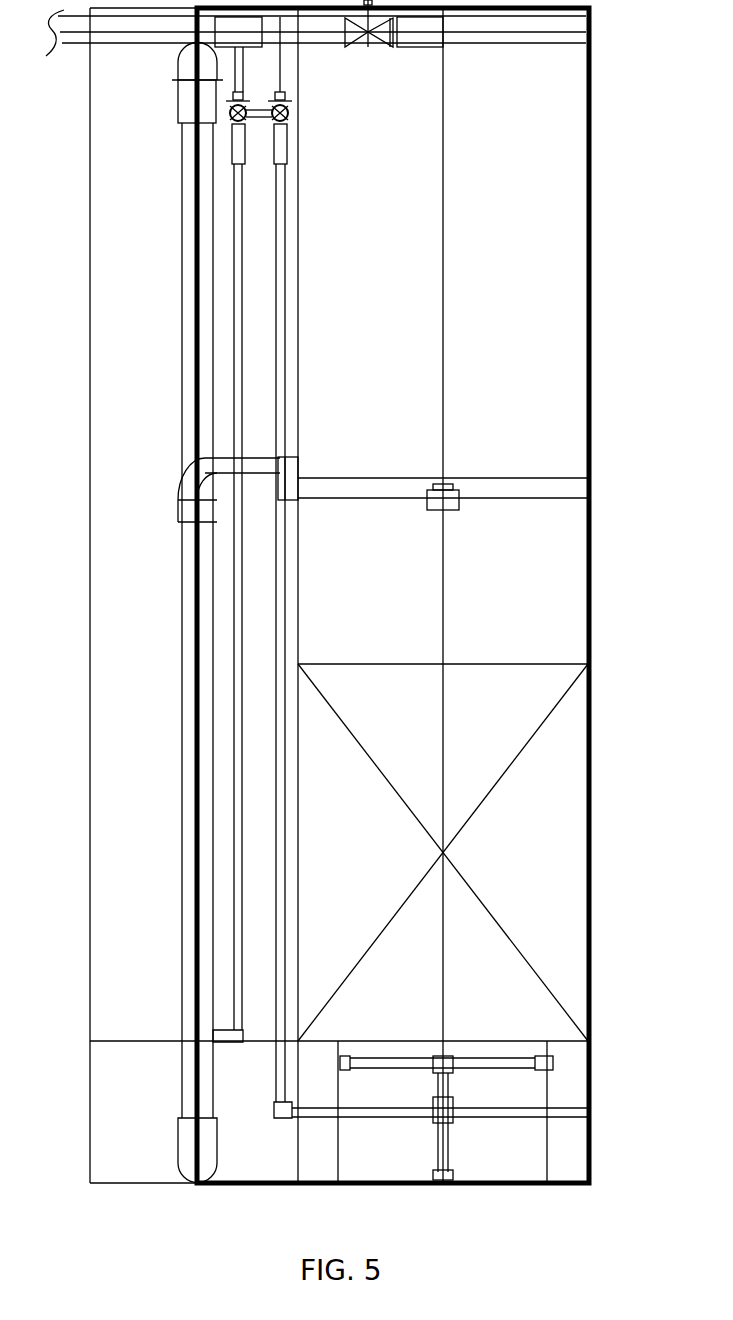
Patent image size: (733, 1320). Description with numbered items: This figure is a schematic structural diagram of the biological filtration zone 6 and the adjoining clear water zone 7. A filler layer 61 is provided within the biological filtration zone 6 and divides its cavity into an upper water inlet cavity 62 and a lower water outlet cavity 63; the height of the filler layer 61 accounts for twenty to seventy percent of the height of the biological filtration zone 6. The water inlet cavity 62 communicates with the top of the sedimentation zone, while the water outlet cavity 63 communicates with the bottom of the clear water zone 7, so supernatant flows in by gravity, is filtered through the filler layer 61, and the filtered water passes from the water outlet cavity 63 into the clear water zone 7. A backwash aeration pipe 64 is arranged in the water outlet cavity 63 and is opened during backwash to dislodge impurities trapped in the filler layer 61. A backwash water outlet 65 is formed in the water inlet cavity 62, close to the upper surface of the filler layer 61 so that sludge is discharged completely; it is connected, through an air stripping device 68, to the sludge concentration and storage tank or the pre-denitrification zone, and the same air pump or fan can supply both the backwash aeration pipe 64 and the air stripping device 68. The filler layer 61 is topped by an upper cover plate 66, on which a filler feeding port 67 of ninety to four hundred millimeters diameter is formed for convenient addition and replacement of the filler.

The biological filtration zone 6 is at (592, 600).
The clear water zone 7 is at (125, 932).
The filler layer 61 is at (537, 842).
The water inlet cavity 62 is at (490, 400).
The water outlet cavity 63 is at (565, 1135).
The backwash aeration pipe 64 is at (527, 1060).
The backwash water outlet 65 is at (290, 472).
The upper cover plate 66 is at (520, 492).
The filler feeding port 67 is at (445, 492).
The air stripping device 68 is at (182, 303).